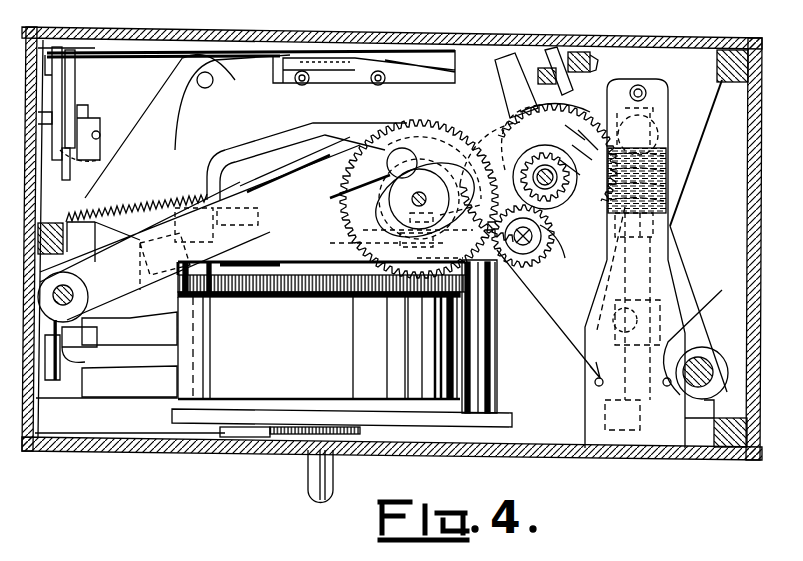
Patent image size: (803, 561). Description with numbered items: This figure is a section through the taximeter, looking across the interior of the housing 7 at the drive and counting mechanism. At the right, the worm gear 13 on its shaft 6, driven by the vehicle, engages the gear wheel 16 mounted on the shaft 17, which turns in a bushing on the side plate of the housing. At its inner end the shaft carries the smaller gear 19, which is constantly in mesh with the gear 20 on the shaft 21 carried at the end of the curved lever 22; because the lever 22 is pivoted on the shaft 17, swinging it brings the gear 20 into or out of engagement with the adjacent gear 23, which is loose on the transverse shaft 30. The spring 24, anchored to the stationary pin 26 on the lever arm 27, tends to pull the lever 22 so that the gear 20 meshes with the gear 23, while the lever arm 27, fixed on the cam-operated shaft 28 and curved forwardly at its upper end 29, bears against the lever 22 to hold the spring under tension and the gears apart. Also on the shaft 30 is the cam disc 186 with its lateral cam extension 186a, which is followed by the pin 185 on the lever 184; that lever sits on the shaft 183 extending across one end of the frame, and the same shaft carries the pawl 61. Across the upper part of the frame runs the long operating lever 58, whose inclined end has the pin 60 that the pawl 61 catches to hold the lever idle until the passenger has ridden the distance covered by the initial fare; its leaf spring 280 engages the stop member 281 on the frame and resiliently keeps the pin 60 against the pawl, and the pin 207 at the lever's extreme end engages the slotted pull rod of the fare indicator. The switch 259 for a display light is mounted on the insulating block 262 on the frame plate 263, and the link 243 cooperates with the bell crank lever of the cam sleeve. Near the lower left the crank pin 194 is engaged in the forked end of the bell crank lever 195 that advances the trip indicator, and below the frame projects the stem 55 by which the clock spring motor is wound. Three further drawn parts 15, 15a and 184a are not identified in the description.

The housing 7 is at (676, 44).
The stop member 281 is at (93, 46).
The switch 259 is at (320, 62).
The block of insulating material 262 is at (348, 72).
The leaf spring 280 is at (100, 58).
The lever 58 is at (152, 80).
The pin 207 is at (76, 110).
The pin 60 is at (100, 134).
The pawl 61 is at (84, 172).
The link 243 is at (250, 166).
The frame plate 263 is at (305, 118).
The curved lever 22 is at (512, 94).
The end of lever 29 is at (542, 96).
The spring 24 is at (560, 116).
The bracket 15a is at (658, 113).
The stationary pin 26 is at (667, 168).
The worm gear 13 is at (667, 187).
The shaft 30 is at (410, 178).
The smaller gear 19 is at (540, 165).
The shaft 17 is at (560, 178).
The pin 185 is at (395, 195).
The lever 184 is at (290, 212).
The cam disc 186 is at (385, 214).
The lateral cam extension 186a is at (478, 214).
The gear wheel 16 is at (556, 246).
The shaft 6 is at (670, 243).
The lever arm 27 is at (688, 280).
The gear 20 is at (553, 260).
The lever 15 is at (700, 322).
The shaft 21 is at (520, 262).
The cam-operated shaft 28 is at (712, 352).
The shaft 183 is at (73, 295).
The lever extension 184a is at (143, 290).
The gear 23 is at (372, 282).
The crank pin 194 is at (150, 348).
The lever 195 is at (137, 360).
The stem 55 is at (333, 470).